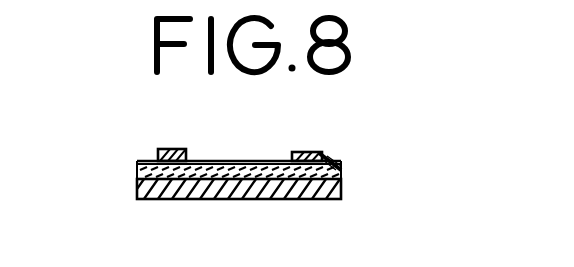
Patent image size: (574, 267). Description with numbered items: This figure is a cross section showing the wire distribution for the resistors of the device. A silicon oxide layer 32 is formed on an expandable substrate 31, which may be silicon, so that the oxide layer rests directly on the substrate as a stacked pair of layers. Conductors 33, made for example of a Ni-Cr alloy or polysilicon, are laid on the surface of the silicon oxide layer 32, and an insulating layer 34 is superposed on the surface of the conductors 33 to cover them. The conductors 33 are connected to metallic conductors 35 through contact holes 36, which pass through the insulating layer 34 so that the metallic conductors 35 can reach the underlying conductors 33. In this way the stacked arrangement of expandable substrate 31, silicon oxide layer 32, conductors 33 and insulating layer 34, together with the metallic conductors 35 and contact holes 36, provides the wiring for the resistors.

The expandable substrate 31 is at (247, 200).
The silicon oxide layer 32 is at (342, 175).
The conductors 33 is at (268, 160).
The insulating layer 34 is at (219, 158).
The metallic conductors 35 is at (301, 152).
The contact holes 36 is at (327, 165).